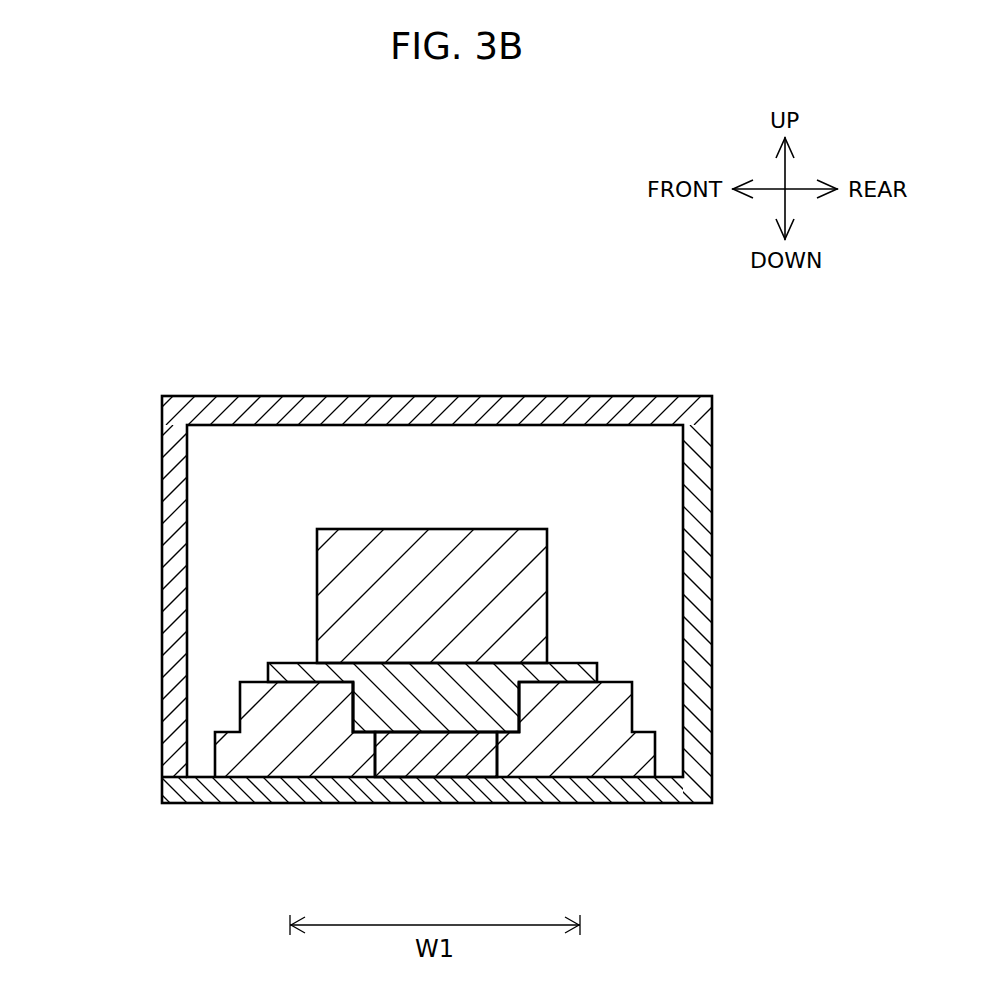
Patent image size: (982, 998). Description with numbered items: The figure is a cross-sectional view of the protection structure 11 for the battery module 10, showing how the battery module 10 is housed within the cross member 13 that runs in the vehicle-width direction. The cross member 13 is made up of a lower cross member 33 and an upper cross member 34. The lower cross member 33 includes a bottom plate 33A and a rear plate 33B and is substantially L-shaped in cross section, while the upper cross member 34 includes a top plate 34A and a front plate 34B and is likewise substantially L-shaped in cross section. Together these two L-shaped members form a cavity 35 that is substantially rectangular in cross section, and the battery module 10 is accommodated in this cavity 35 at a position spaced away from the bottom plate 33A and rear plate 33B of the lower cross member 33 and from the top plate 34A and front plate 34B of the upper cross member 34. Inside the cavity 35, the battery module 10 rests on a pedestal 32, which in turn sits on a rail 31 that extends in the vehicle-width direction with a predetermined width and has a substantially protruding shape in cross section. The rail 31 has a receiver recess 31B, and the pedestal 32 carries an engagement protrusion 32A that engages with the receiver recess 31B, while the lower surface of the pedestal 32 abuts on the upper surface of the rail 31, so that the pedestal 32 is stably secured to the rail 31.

The battery module 10 is at (387, 562).
The protection structure 11 is at (463, 313).
The cross member 13 is at (620, 396).
The rail 31 is at (288, 763).
The receiver recess 31B is at (472, 770).
The pedestal 32 is at (282, 673).
The engagement protrusion 32A is at (403, 715).
The lower cross member 33 is at (563, 629).
The bottom plate 33A is at (652, 797).
The rear plate 33B is at (703, 737).
The upper cross member 34 is at (361, 574).
The top plate 34A is at (253, 403).
The front plate 34B is at (175, 486).
The cavity 35 is at (650, 485).